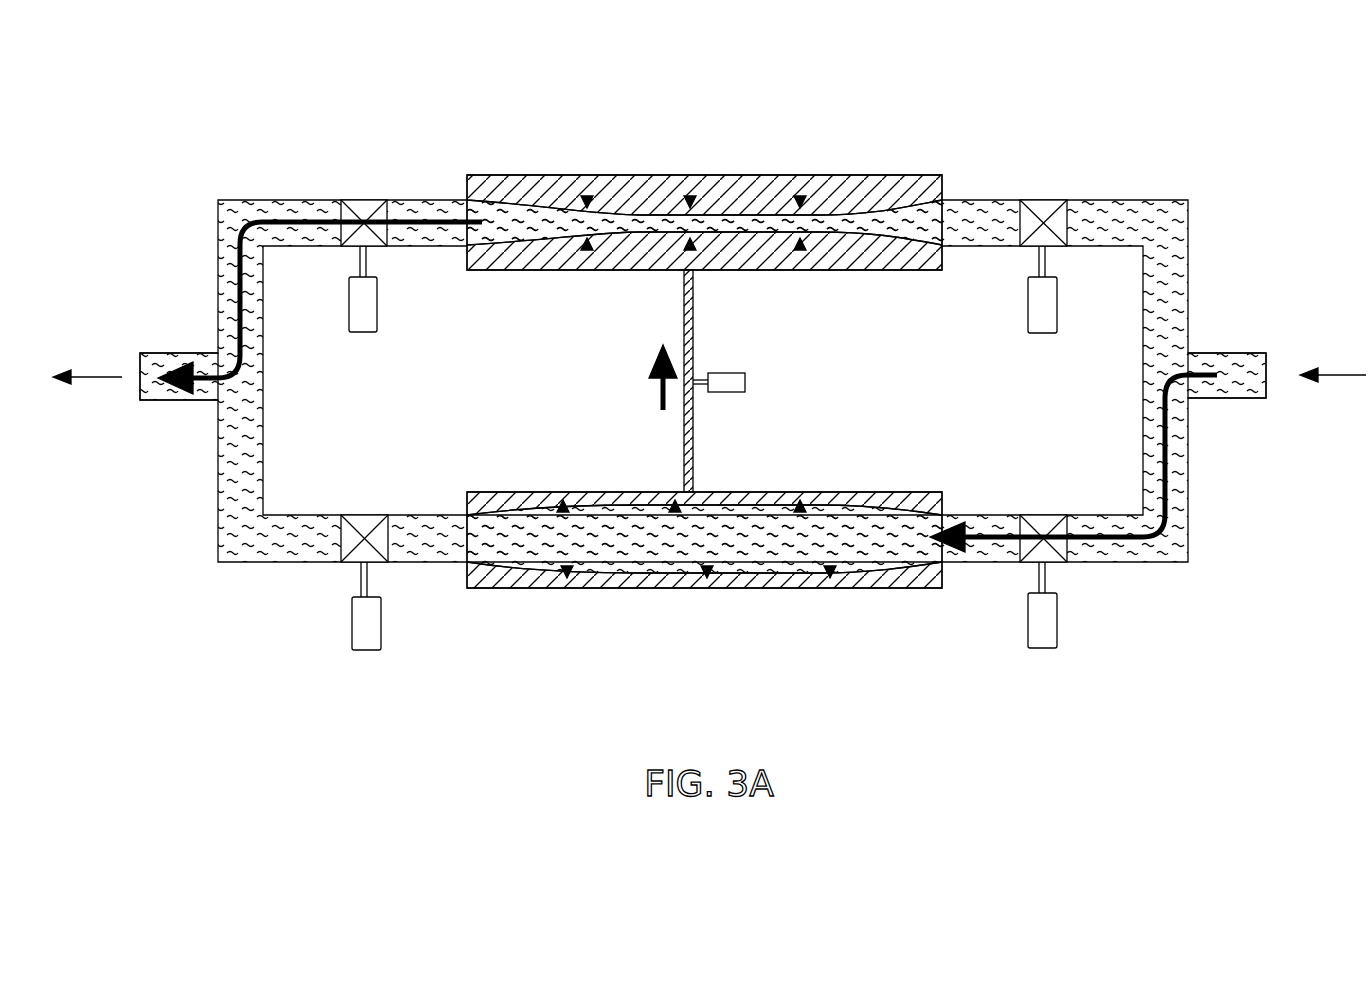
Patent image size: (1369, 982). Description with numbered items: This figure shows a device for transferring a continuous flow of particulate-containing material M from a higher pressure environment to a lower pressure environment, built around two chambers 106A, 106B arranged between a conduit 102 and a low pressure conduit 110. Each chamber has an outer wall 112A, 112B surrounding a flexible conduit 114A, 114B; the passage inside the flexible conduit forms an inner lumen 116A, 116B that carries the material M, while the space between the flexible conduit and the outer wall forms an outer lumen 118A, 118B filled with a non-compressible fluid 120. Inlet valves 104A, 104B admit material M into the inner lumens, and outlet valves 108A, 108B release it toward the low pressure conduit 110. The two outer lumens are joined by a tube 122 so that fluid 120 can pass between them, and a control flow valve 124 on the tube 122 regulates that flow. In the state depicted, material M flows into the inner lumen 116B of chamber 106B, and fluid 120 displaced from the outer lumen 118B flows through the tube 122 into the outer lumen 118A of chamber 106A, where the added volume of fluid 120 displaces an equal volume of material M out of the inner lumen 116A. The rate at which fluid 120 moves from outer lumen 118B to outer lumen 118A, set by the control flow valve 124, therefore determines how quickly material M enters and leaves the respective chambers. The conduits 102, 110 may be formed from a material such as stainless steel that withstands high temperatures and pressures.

The particulate-containing material M is at (1168, 258).
The conduit 102 is at (1228, 352).
The low pressure conduit 110 is at (165, 353).
The inlet valve 104A is at (1040, 208).
The inlet valve 104B is at (1050, 560).
The outlet valve 108A is at (363, 205).
The outlet valve 108B is at (372, 557).
The chamber 106A is at (719, 223).
The chamber 106B is at (724, 541).
The outer wall 112A is at (707, 175).
The outer wall 112B is at (670, 588).
The flexible conduit 114A is at (895, 208).
The flexible conduit 114B is at (860, 573).
The inner lumen 116A is at (897, 227).
The inner lumen 116B is at (893, 527).
The outer lumen 118A is at (525, 260).
The outer lumen 118B is at (508, 500).
The non-compressible fluid 120 is at (620, 260).
The tube 122 is at (693, 312).
The control flow valve 124 is at (733, 393).